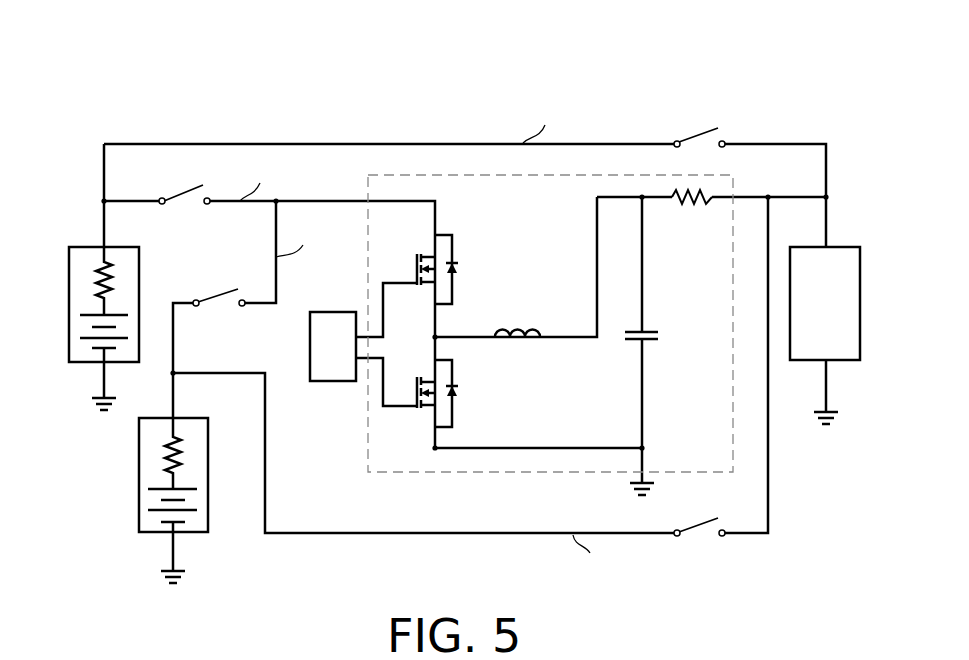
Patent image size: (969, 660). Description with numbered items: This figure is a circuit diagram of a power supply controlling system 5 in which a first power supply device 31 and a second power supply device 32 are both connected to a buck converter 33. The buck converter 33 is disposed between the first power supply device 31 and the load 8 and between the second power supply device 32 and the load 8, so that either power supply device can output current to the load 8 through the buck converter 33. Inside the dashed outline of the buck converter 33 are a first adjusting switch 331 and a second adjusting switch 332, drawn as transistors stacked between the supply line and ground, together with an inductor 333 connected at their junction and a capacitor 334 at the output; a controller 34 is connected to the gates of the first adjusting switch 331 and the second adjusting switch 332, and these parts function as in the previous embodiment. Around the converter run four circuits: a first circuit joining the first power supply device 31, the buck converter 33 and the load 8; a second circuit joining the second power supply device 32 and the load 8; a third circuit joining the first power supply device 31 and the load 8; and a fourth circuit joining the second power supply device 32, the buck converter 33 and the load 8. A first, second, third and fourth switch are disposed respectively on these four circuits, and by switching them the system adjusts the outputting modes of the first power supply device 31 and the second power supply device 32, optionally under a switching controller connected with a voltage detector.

The power conversion circuit 5 is at (458, 50).
The load 8 is at (838, 247).
The first power supply device 31 is at (92, 247).
The second power supply device 32 is at (208, 488).
The buck converter 33 is at (368, 432).
The first adjusting switch 331 is at (465, 246).
The second adjusting switch 332 is at (467, 391).
The inductor 333 is at (522, 317).
The capacitor 334 is at (662, 324).
The controller 34 is at (328, 312).